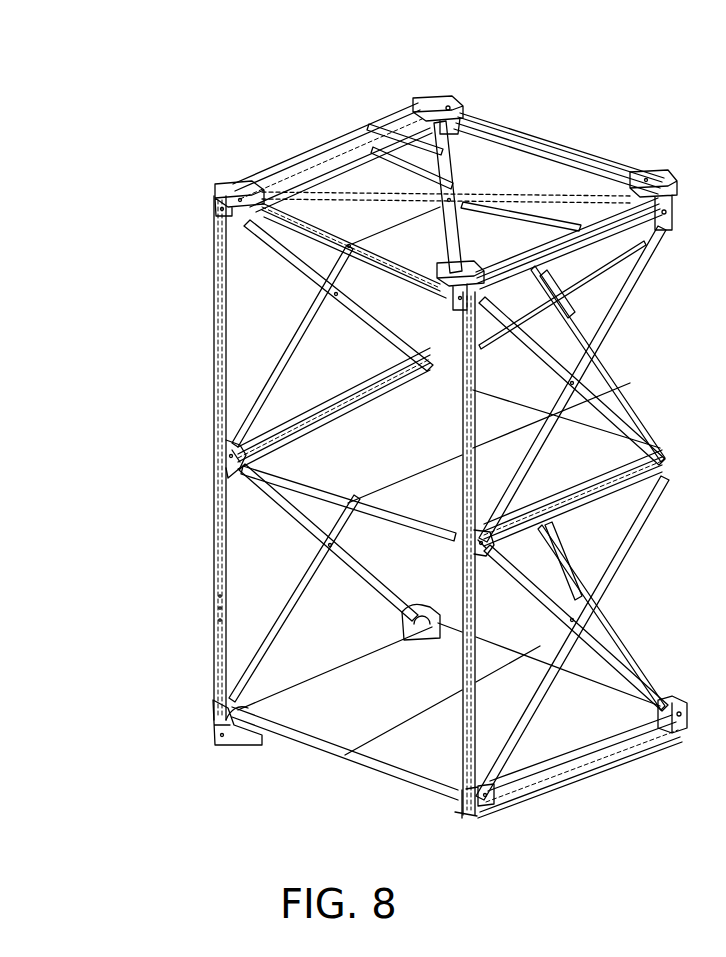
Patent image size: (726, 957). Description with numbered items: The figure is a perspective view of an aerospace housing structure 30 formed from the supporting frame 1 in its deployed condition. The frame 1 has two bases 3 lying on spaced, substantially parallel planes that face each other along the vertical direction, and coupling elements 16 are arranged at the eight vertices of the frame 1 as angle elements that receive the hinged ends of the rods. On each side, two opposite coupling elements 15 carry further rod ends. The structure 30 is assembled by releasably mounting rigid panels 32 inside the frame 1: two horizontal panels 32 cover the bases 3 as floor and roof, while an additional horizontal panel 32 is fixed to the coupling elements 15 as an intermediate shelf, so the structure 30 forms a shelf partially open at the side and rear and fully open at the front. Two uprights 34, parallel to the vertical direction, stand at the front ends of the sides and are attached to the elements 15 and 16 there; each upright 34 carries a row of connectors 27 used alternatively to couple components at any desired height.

The frame 1 is at (583, 110).
The base 3 is at (462, 140).
The coupling element 15 is at (223, 463).
The coupling element 16 is at (224, 184).
The connector 27 is at (208, 598).
The housing structure 30 is at (683, 670).
The rigid panel 32 is at (575, 164).
The upright 34 is at (213, 300).